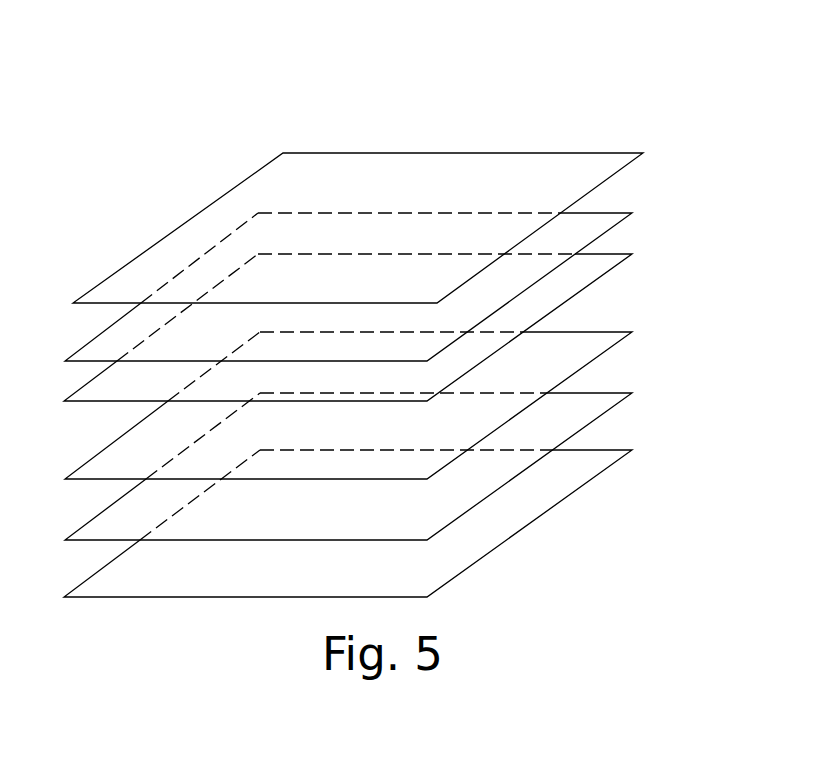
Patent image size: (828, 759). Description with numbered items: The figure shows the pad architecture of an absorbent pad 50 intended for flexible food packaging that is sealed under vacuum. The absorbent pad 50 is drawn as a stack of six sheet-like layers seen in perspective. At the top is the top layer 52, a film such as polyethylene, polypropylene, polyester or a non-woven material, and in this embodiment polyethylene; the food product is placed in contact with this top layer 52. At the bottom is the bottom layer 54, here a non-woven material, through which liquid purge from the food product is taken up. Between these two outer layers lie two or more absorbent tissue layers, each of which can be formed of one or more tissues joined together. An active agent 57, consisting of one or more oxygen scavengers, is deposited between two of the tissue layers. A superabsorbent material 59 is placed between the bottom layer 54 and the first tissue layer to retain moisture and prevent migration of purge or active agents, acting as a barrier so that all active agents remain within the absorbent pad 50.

The absorbent pad 50 is at (136, 156).
The top layer 52 is at (388, 153).
The bottom layer 54 is at (598, 476).
The active agent 57 is at (606, 273).
The superabsorbent material 59 is at (607, 411).